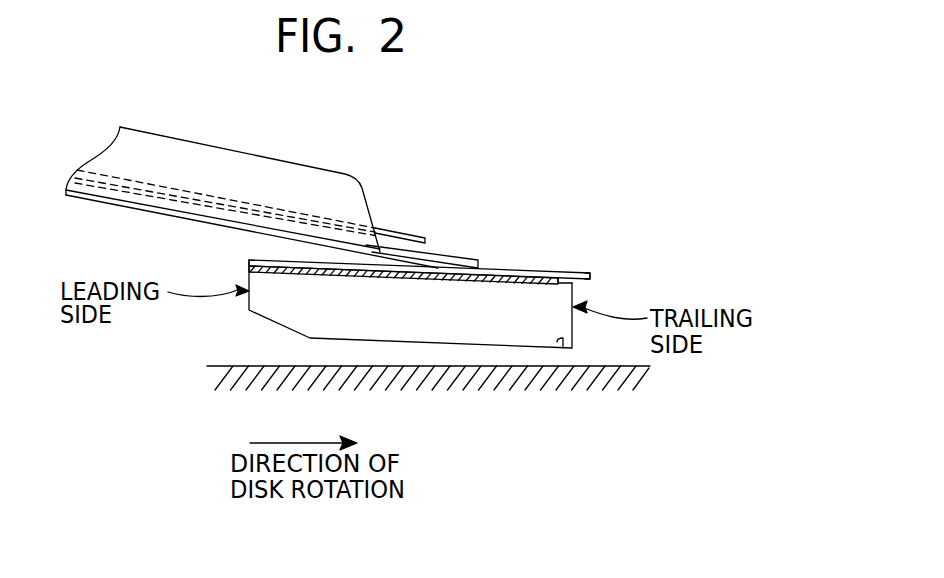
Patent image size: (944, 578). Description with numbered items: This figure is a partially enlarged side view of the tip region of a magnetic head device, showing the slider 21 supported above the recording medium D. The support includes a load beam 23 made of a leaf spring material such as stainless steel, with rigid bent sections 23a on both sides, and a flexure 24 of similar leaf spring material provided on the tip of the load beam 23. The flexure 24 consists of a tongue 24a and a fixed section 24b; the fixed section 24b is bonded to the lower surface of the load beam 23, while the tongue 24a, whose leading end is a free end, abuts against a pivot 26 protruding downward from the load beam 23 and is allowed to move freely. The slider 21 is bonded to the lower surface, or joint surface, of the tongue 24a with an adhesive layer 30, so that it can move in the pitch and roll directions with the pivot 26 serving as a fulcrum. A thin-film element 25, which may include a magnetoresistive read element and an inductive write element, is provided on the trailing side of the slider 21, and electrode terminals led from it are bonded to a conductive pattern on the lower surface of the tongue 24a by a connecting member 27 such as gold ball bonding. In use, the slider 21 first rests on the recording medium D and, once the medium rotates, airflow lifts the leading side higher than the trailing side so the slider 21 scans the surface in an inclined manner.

The slider 21 is at (532, 278).
The load beam 23 is at (257, 170).
The bent sections 23a is at (183, 153).
The flexure 24 is at (527, 308).
The tongue 24a is at (388, 266).
The fixed section 24b is at (487, 268).
The thin-film element 25 is at (553, 340).
The pivot 26 is at (423, 268).
The connecting member 27 is at (582, 284).
The adhesive layer 30 is at (553, 276).
The recording medium D is at (463, 367).